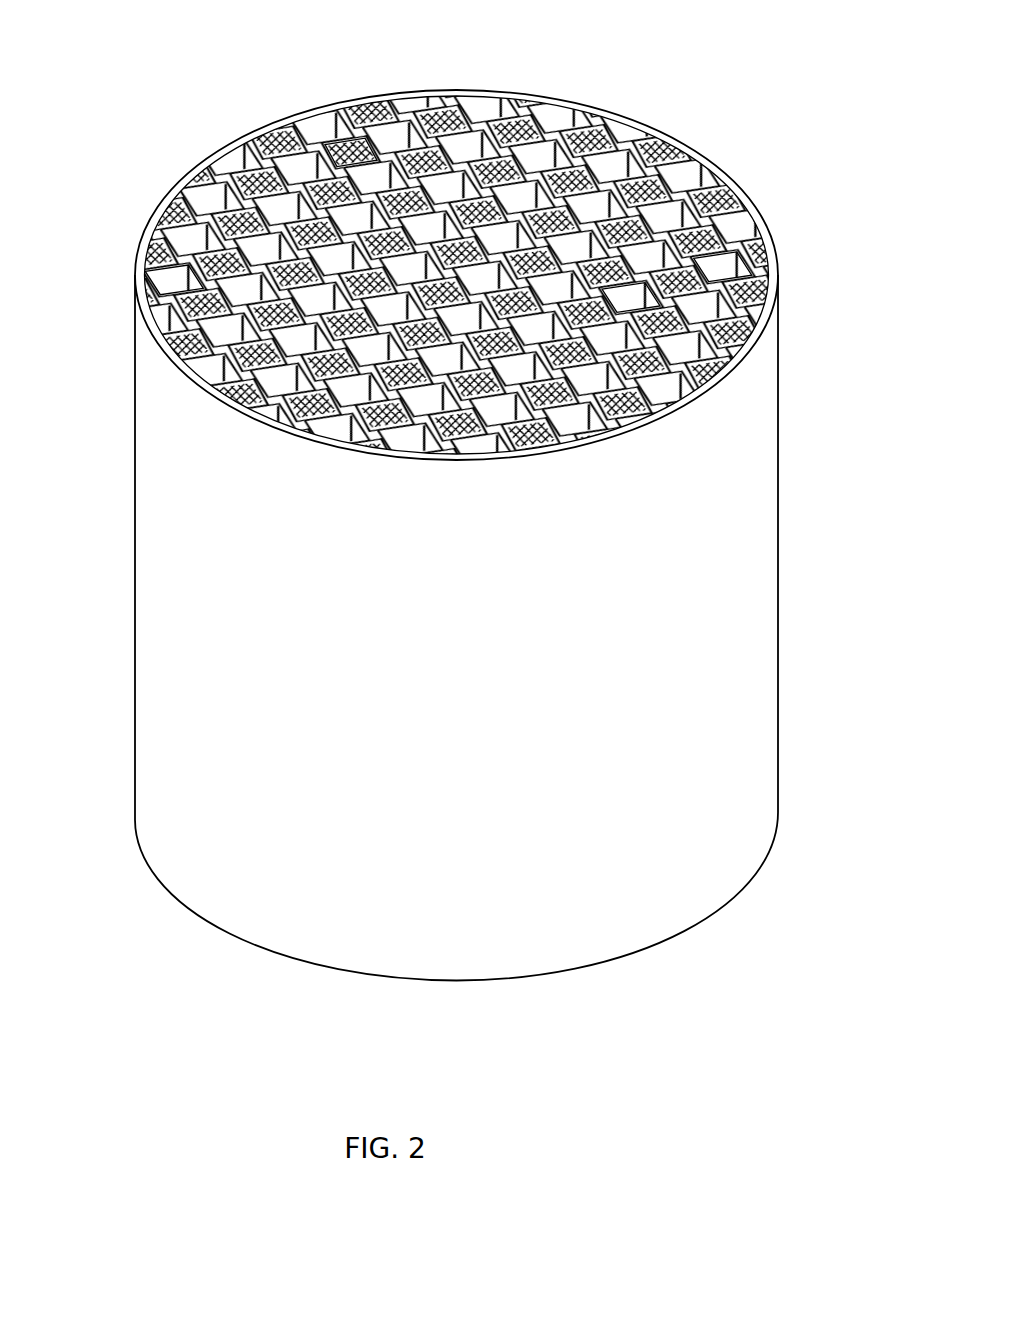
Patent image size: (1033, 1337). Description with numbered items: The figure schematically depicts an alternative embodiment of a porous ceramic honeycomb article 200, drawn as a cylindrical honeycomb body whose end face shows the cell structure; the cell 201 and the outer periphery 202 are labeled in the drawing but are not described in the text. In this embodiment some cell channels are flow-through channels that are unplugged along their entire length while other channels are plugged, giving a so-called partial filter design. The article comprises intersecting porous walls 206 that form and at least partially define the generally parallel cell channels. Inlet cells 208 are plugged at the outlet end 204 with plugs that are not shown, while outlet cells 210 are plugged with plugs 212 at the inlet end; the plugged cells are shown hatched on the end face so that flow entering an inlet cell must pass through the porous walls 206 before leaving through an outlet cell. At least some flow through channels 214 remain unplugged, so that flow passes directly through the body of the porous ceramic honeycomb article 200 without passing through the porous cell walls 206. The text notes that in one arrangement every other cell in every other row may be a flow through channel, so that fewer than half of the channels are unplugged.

The porous ceramic honeycomb article 200 is at (463, 513).
The cell 201 is at (178, 284).
The outer skin 202 is at (716, 158).
The outlet end 204 is at (628, 950).
The porous walls 206 is at (563, 150).
The inlet cells 208 is at (320, 170).
The outlet cells 210 is at (262, 163).
The plugs 212 is at (370, 138).
The flow through channels 214 is at (633, 300).